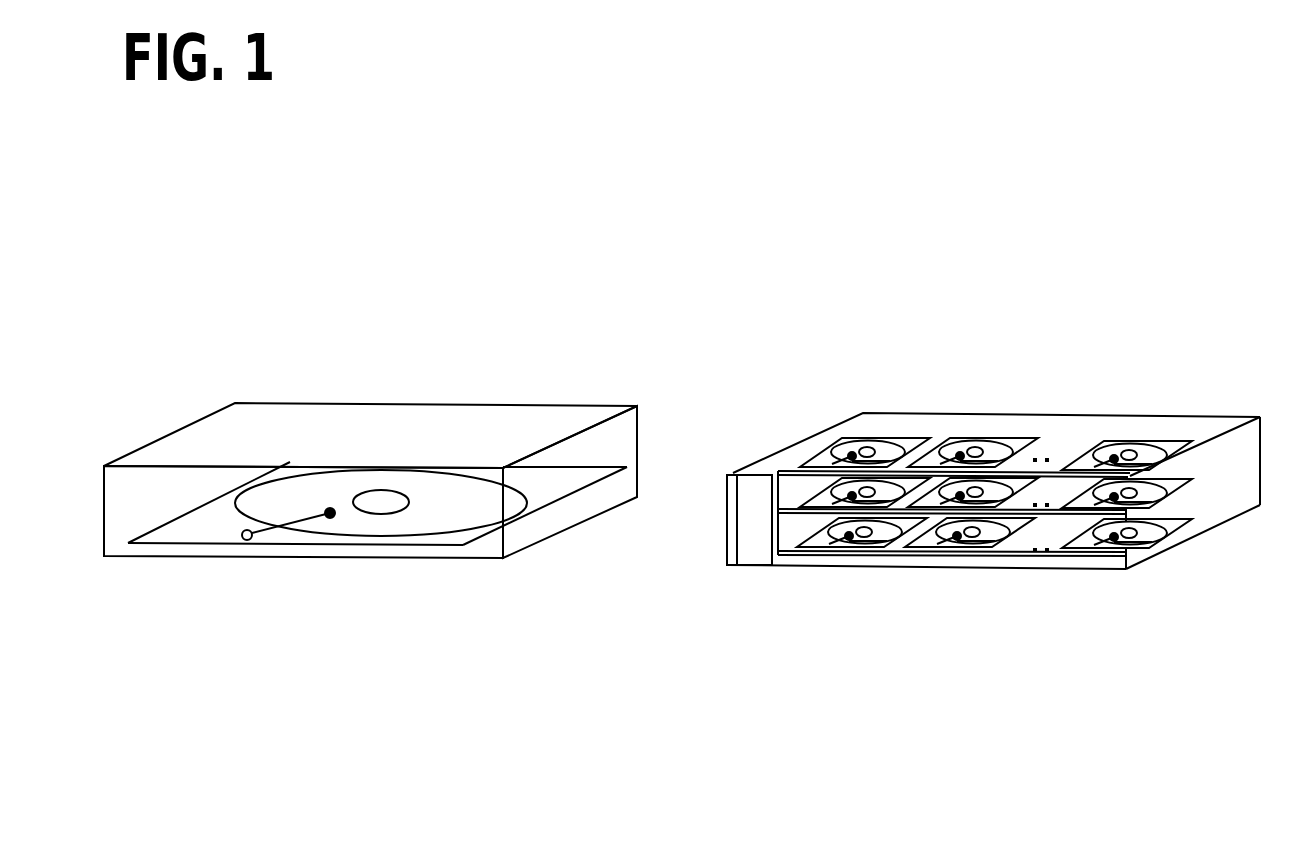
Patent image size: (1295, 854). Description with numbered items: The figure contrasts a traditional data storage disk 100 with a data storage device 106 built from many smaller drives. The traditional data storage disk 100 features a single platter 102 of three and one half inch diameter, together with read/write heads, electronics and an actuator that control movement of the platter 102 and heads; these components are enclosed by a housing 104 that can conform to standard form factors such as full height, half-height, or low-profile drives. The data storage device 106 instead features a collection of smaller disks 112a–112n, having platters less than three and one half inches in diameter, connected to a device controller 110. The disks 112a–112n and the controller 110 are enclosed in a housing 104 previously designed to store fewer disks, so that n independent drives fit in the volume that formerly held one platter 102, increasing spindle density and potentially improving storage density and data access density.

The data storage disk 100 is at (370, 582).
The platter 102 is at (413, 543).
The housing 104 is at (557, 538).
The disc drive array / rack 106 is at (993, 560).
The device controller 110 is at (752, 552).
The disk 112a is at (882, 437).
The disk 112n is at (1130, 556).